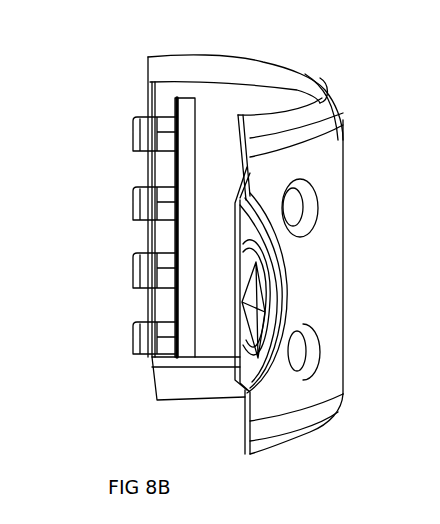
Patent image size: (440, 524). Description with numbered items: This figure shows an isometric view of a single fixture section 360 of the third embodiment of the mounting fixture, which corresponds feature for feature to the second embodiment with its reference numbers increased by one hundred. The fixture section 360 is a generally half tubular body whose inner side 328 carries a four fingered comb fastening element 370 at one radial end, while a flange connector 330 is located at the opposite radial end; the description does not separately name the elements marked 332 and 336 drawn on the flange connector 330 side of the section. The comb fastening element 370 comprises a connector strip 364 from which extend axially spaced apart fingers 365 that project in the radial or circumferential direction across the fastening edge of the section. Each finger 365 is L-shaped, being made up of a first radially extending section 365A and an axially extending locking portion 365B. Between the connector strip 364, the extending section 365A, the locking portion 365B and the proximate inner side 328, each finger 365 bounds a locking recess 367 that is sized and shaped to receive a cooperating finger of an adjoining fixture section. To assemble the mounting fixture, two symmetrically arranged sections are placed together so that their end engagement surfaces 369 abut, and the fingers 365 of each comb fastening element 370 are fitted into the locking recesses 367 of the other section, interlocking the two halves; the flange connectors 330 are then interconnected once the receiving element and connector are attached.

The inner side 328 is at (322, 252).
The flange connector 330 is at (278, 303).
The aperture 332 is at (297, 203).
The detent 336 is at (246, 313).
The fixture section 360 is at (315, 451).
The connector strip 364 is at (185, 167).
The finger 365 is at (150, 351).
The radially extending section 365A is at (158, 143).
The locking portion 365B is at (143, 128).
The locking recess 367 is at (163, 115).
The end engagement surface 369 is at (150, 377).
The comb fastening element 370 is at (188, 118).